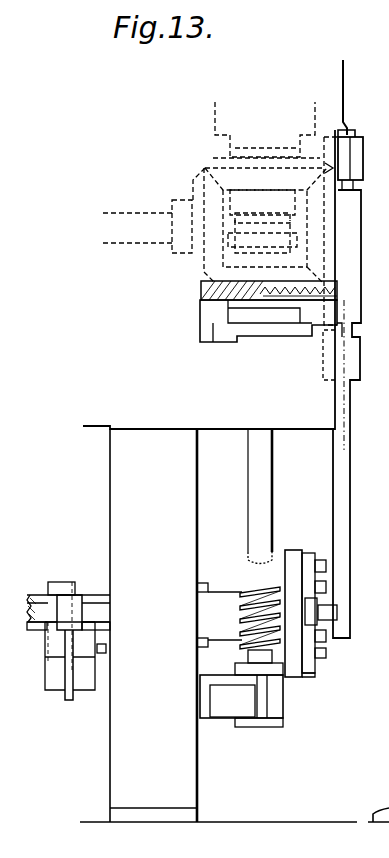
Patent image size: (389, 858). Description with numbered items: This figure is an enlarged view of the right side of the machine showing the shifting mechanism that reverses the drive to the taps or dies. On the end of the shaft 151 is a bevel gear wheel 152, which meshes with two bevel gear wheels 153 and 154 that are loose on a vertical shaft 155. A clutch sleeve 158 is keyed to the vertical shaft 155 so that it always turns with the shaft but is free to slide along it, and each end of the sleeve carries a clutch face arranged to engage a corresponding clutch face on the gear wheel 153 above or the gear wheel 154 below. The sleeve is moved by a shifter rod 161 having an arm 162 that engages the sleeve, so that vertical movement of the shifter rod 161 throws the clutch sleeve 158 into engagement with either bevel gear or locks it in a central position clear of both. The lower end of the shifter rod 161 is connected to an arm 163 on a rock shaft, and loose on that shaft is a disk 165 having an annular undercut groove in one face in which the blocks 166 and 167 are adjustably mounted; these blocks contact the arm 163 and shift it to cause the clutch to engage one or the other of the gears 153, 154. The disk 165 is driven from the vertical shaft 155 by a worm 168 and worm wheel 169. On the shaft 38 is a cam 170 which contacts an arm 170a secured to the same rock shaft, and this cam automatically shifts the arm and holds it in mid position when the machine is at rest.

The shaft 38 is at (93, 596).
The shaft 151 is at (147, 226).
The bevel gear wheel 152 is at (203, 283).
The bevel gear wheel 153 is at (265, 213).
The bevel gear wheel 154 is at (202, 300).
The vertical shaft 155 is at (234, 624).
The clutch sleeve 158 is at (262, 206).
The shifter rod 161 is at (343, 478).
The arm 162 is at (275, 236).
The arm 163 is at (337, 612).
The disk 165 is at (297, 680).
The block 166 is at (309, 560).
The block 167 is at (308, 673).
The worm 168 is at (241, 615).
The worm wheel 169 is at (257, 577).
The cam 170 is at (75, 626).
The arm 170a is at (67, 698).